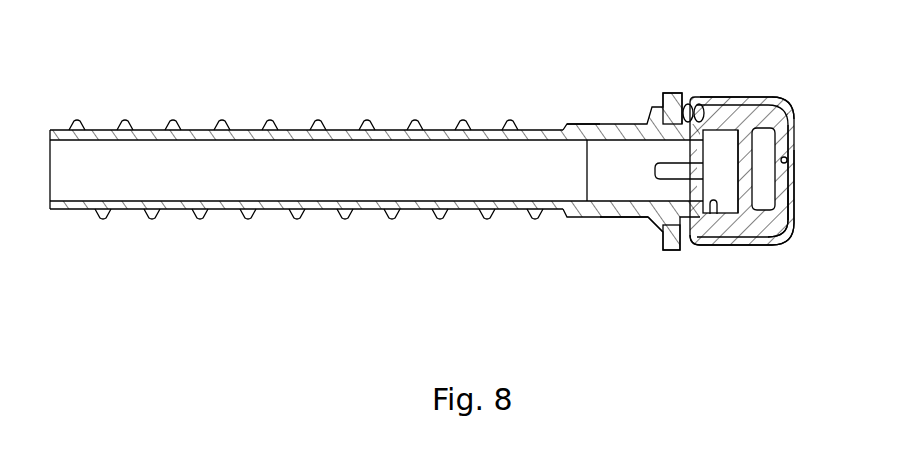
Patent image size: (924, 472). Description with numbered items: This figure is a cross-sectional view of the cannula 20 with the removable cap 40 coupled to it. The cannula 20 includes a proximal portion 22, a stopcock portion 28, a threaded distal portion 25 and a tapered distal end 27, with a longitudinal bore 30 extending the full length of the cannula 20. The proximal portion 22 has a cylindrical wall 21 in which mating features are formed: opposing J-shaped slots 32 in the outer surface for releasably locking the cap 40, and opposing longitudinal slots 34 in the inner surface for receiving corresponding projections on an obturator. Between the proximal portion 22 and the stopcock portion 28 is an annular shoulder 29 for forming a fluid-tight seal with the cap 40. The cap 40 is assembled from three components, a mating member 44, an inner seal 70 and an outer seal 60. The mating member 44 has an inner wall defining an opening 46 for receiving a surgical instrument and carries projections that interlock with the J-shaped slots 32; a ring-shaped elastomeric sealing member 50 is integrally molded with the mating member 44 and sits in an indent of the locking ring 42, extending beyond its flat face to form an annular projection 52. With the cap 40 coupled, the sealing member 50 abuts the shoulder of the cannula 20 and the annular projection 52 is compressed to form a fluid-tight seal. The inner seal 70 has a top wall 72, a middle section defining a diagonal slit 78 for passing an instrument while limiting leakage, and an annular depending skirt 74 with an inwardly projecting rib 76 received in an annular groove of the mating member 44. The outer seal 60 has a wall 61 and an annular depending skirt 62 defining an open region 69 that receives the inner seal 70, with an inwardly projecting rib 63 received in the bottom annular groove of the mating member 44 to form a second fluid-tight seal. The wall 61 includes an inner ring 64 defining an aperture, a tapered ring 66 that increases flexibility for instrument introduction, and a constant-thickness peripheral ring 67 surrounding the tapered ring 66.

The cannula 20 is at (425, 211).
The cylindrical wall 21 is at (588, 124).
The proximal portion 22 is at (682, 93).
The threaded distal portion 25 is at (362, 219).
The tapered distal end 27 is at (60, 211).
The stopcock portion 28 is at (578, 216).
The annular shoulder 29 is at (640, 227).
The bore 30 is at (530, 187).
The mating features 32 is at (705, 97).
The longitudinal slots 34 is at (658, 163).
The cap 40 is at (758, 97).
The locking ring 42 is at (672, 250).
The mating member 44 is at (735, 246).
The opening 46 is at (717, 245).
The sealing member 50 is at (662, 230).
The annular projection 52 is at (660, 107).
The outer seal 60 is at (794, 103).
The wall 61 is at (794, 125).
The annular depending skirt 62 is at (780, 97).
The inwardly projecting rib 63 is at (688, 247).
The inner ring 64 is at (795, 188).
The tapered ring 66 is at (794, 202).
The peripheral ring 67 is at (788, 232).
The open region 69 is at (795, 167).
The inner seal 70 is at (772, 245).
The wall 72 is at (794, 247).
The annular depending skirt 74 is at (750, 242).
The inwardly projecting rib 76 is at (725, 97).
The diagonal slit 78 is at (795, 152).